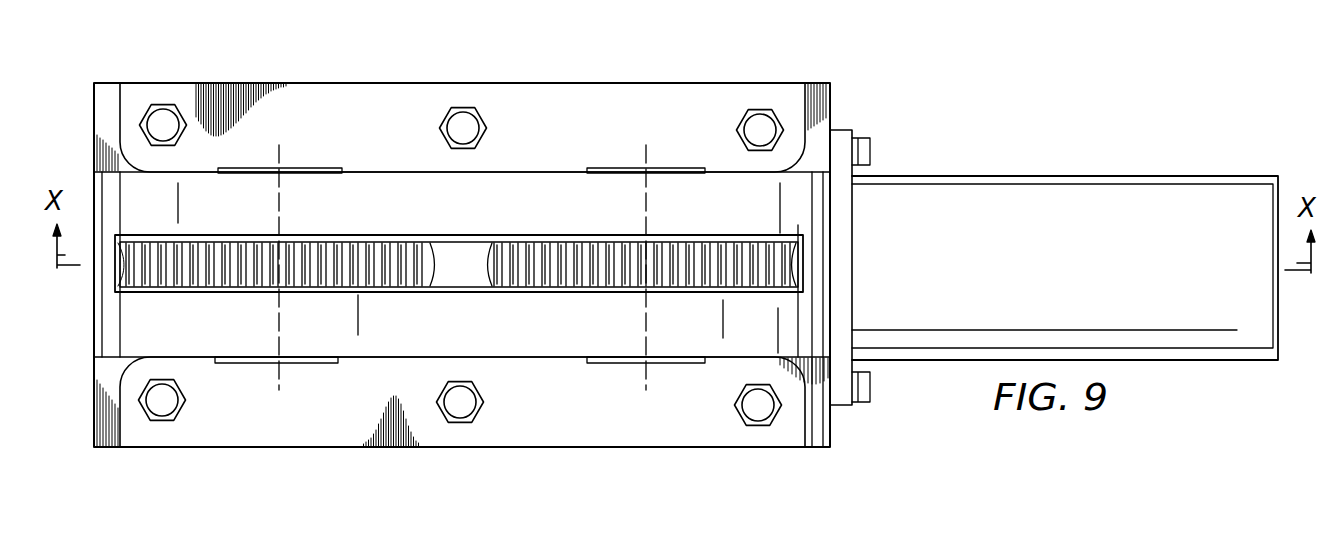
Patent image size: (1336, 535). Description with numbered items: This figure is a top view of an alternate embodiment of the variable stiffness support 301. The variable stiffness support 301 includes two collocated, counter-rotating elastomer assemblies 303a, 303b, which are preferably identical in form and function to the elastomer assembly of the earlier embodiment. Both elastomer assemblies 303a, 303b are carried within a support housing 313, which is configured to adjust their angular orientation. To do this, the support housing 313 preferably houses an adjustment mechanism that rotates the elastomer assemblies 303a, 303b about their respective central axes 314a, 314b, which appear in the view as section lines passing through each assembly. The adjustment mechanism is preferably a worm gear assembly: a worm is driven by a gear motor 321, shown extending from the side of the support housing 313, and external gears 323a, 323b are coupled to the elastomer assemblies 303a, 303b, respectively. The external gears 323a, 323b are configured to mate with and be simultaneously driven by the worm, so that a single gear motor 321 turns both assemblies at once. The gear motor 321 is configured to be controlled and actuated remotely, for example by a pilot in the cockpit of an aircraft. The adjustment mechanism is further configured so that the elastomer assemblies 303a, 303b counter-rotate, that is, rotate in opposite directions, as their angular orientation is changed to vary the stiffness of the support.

The variable stiffness support 301 is at (947, 68).
The support housing 313 is at (533, 172).
The central axis 314a is at (281, 150).
The central axis 314b is at (647, 150).
The gear motor 321 is at (1130, 176).
The external gear 323a is at (440, 263).
The external gear 323b is at (490, 265).
The elastomer assembly 303a is at (310, 365).
The elastomer assembly 303b is at (613, 365).